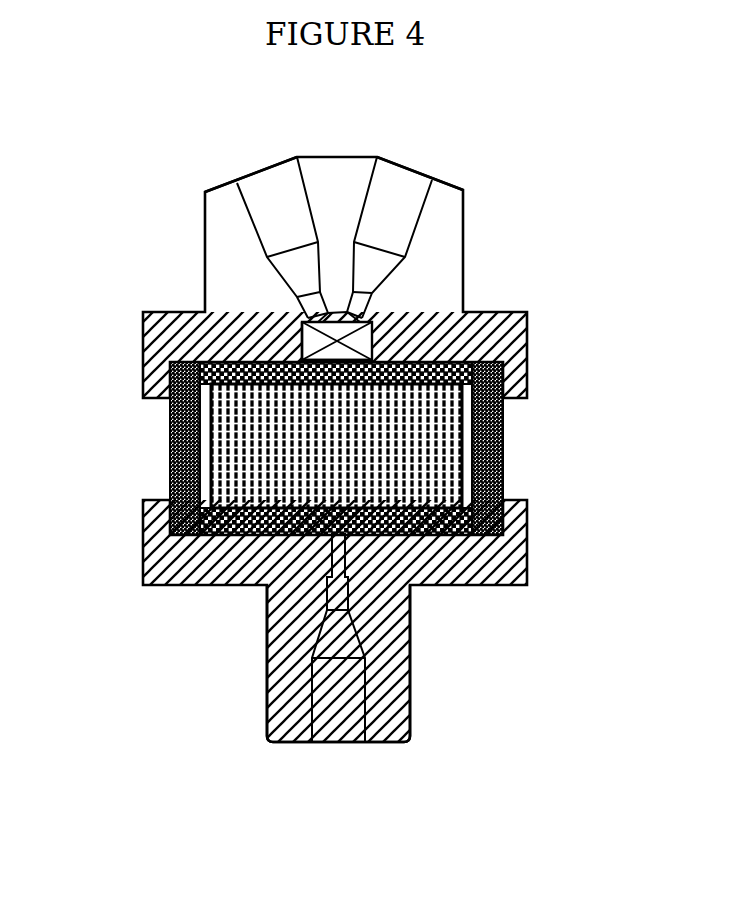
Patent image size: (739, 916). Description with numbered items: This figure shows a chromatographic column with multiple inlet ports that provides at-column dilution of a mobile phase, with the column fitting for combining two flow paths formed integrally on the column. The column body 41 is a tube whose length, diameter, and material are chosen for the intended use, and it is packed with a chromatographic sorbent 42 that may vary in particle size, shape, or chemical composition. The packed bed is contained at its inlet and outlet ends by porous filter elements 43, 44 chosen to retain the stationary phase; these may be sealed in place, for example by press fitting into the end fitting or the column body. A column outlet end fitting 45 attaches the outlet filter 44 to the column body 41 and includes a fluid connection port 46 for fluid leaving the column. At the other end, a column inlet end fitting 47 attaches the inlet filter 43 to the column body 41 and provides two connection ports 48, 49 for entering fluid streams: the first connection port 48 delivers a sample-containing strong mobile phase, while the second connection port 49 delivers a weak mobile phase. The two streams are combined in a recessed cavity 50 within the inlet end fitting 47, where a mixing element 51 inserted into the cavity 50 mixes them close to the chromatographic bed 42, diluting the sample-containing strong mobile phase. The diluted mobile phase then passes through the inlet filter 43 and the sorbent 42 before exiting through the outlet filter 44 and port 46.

The column body 41 is at (184, 440).
The chromatographic sorbent 42 is at (397, 464).
The inlet porous filter element 43 is at (483, 333).
The outlet porous filter element 44 is at (237, 534).
The column outlet end fitting 45 is at (287, 604).
The fluid connection port 46 is at (342, 712).
The column inlet end fitting 47 is at (430, 290).
The first connection port 48 is at (263, 187).
The second connection port 49 is at (407, 178).
The recessed cavity 50 is at (324, 328).
The mixing element 51 is at (306, 342).